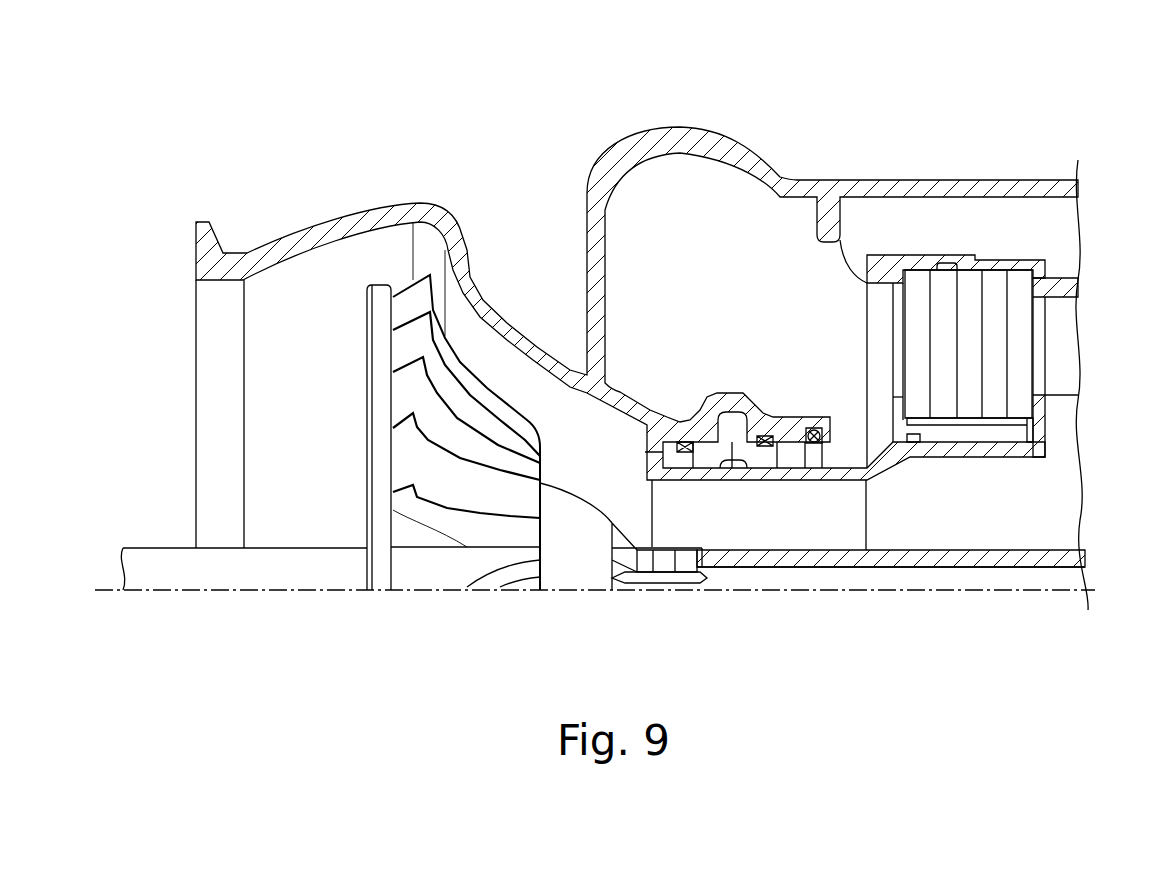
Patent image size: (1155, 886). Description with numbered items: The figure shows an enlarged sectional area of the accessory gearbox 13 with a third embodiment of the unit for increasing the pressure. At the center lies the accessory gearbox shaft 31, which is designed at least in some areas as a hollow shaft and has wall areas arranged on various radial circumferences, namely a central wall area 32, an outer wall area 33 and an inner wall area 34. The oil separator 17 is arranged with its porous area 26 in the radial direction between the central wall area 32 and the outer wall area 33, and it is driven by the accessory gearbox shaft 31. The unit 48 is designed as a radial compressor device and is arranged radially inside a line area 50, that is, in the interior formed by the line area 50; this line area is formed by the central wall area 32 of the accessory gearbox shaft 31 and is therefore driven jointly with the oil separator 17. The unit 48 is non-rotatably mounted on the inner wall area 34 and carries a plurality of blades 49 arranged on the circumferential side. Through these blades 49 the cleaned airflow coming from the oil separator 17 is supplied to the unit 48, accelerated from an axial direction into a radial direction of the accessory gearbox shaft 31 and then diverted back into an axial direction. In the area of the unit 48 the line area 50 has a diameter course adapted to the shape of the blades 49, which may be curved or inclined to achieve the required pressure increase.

The accessory gearbox 13 is at (343, 125).
The oil separator 17 is at (1005, 250).
The porous area 26 is at (990, 360).
The accessory gearbox shaft 31 is at (1052, 542).
The central wall area 32 is at (1010, 457).
The outer wall area 33 is at (940, 262).
The inner wall area 34 is at (966, 567).
The unit 48 is at (365, 487).
The blades 49 is at (457, 530).
The line area 50 is at (472, 282).